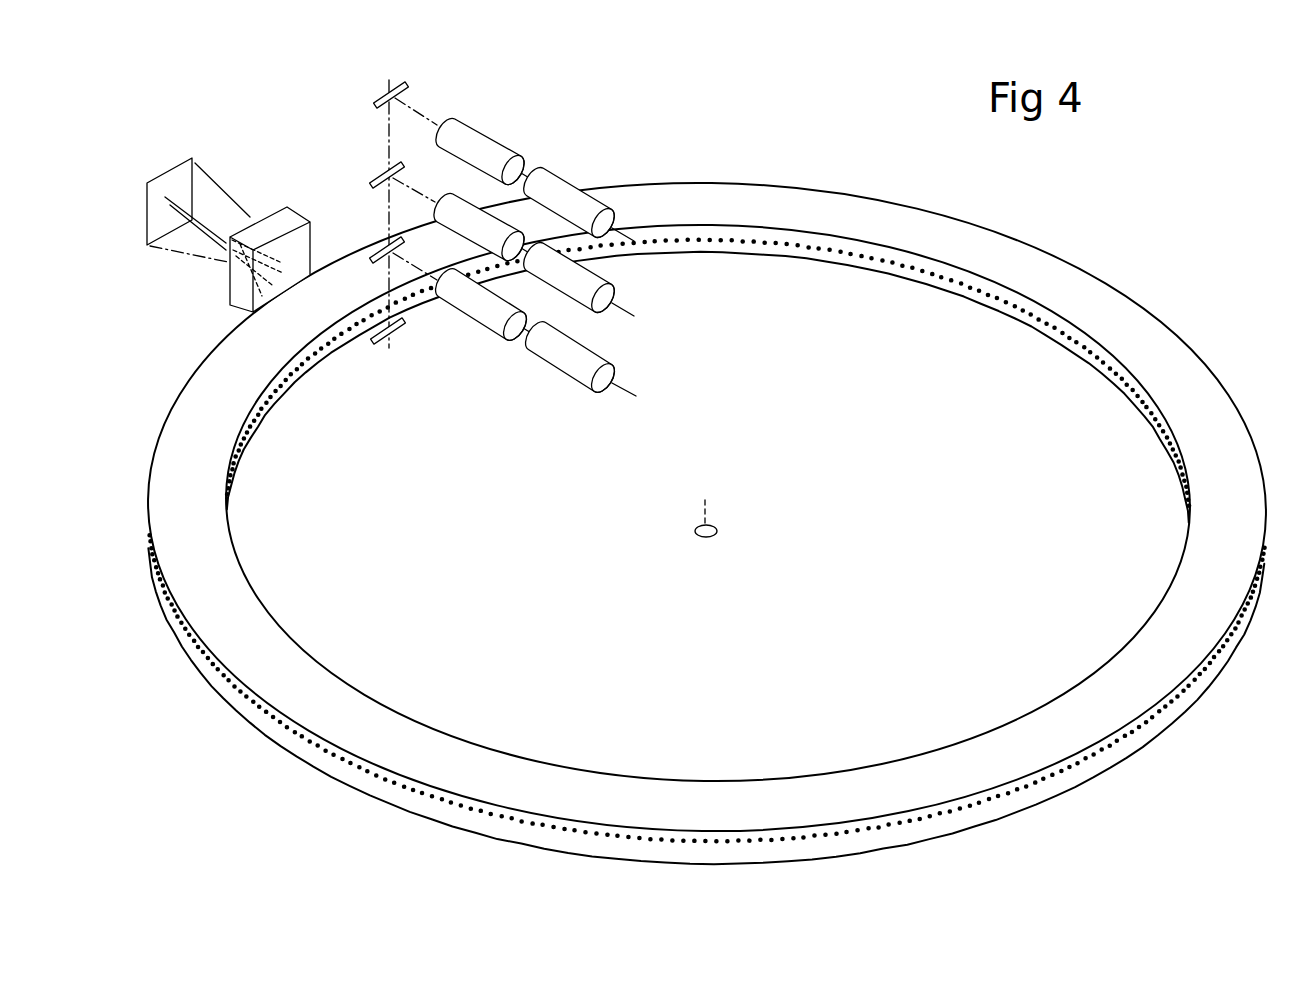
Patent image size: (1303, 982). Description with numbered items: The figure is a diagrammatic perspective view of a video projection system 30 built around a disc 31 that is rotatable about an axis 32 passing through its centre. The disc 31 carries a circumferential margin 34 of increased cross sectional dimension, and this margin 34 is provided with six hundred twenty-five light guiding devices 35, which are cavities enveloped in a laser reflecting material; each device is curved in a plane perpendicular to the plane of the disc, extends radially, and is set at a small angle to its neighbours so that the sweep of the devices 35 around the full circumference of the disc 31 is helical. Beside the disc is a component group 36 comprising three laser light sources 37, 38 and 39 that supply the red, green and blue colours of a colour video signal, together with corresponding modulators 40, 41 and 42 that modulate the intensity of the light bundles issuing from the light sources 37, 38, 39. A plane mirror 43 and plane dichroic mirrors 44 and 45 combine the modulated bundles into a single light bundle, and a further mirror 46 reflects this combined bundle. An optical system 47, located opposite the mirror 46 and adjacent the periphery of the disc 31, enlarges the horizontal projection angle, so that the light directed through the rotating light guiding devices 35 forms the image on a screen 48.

The video projection system 30 is at (706, 497).
The disc 31 is at (862, 197).
The axis 32 is at (705, 500).
The circumferential margin 34 is at (1120, 322).
The light guiding devices 35 is at (1123, 392).
The component group 36 is at (618, 295).
The laser light source 37 is at (565, 378).
The laser light source 38 is at (563, 302).
The laser light source 39 is at (570, 177).
The modulator 40 is at (466, 320).
The modulator 41 is at (470, 203).
The modulator 42 is at (485, 135).
The plane mirror 43 is at (383, 92).
The plane dichroic mirror 44 is at (383, 167).
The plane dichroic mirror 45 is at (382, 240).
The mirror 46 is at (389, 346).
The optical system 47 is at (228, 294).
The screen 48 is at (173, 158).